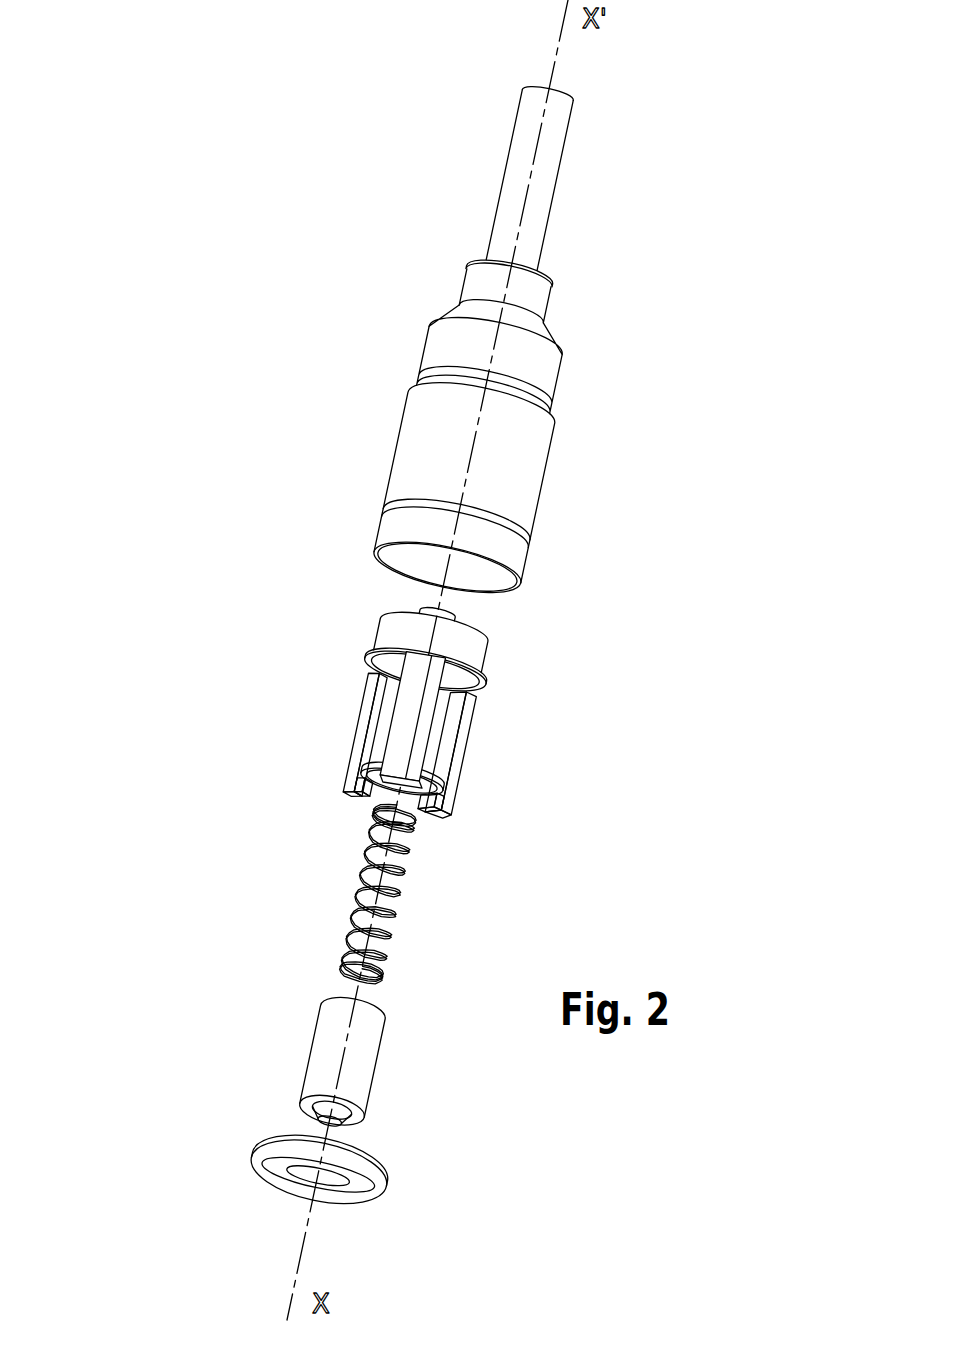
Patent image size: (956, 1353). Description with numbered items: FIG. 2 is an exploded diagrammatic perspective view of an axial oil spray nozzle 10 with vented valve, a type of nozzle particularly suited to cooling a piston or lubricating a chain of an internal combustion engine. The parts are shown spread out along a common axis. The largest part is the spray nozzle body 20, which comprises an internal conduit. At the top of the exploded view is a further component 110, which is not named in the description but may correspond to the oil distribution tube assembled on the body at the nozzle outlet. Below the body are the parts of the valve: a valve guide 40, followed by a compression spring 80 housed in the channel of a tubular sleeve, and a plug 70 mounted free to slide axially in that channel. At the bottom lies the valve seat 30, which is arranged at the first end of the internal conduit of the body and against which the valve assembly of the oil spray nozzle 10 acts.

The axial oil spray nozzle 10 is at (148, 293).
The stem / shaft 110 is at (519, 187).
The spray nozzle body 20 is at (432, 437).
The valve guide 40 is at (397, 640).
The compression spring 80 is at (366, 888).
The plug 70 is at (327, 1041).
The valve seat 30 is at (268, 1150).